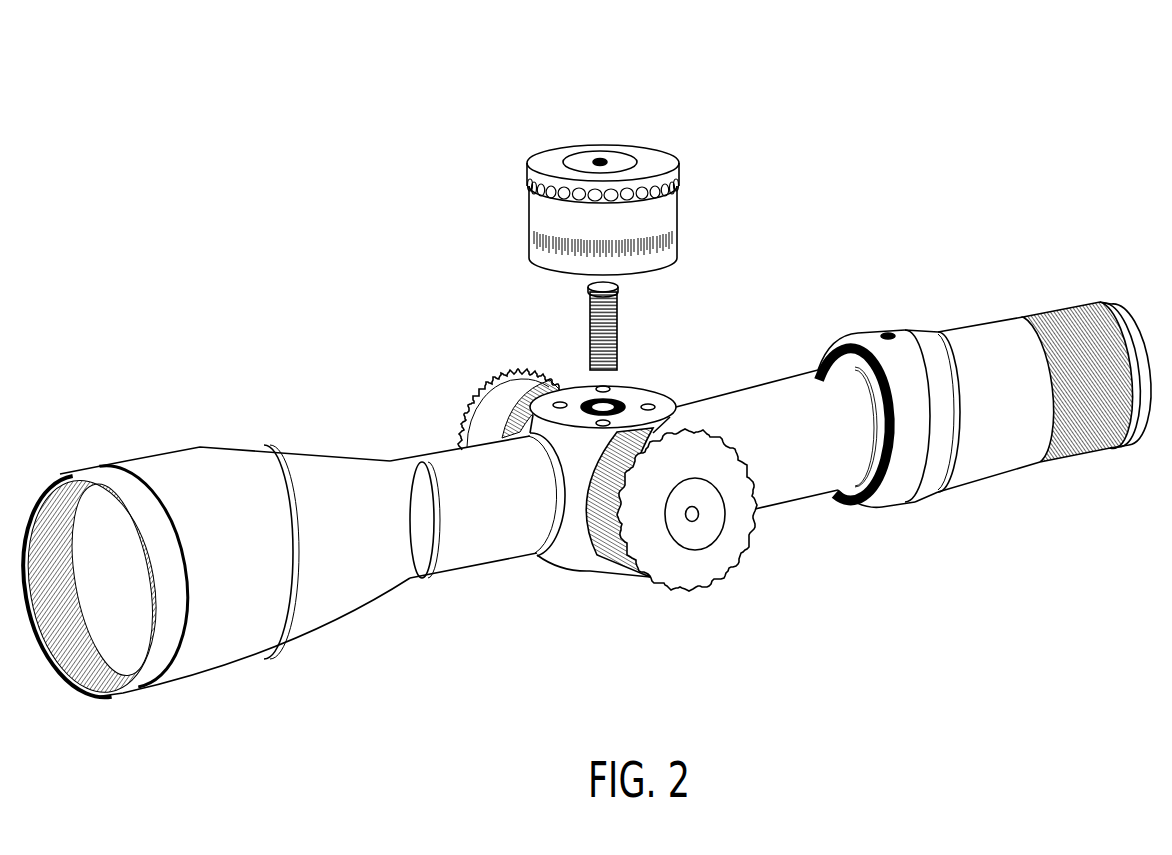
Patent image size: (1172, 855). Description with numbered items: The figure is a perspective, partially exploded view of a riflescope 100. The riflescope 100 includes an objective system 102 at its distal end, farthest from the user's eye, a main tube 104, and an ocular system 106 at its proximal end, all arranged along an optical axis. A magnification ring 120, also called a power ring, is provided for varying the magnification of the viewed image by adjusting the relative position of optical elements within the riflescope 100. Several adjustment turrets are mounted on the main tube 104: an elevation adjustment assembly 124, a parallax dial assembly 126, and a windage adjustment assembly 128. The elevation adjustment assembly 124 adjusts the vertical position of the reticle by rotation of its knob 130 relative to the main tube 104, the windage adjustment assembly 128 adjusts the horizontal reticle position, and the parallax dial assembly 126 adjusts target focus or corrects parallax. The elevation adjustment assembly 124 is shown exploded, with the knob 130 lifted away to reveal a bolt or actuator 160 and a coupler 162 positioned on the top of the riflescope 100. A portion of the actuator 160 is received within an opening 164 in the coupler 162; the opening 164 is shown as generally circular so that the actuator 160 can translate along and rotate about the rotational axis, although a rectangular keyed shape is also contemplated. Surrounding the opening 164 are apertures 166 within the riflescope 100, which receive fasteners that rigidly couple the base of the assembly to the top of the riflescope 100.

The riflescope 100 is at (765, 197).
The objective system 102 is at (160, 438).
The main tube 104 is at (767, 507).
The ocular system 106 is at (1012, 303).
The magnification ring 120 is at (862, 335).
The elevation adjustment assembly 124 is at (545, 140).
The parallax dial assembly 126 is at (633, 592).
The windage adjustment assembly 128 is at (495, 363).
The knob 130 is at (522, 173).
The actuator 160 is at (617, 313).
The coupler 162 is at (580, 377).
The opening 164 is at (615, 395).
The apertures 166 is at (650, 403).